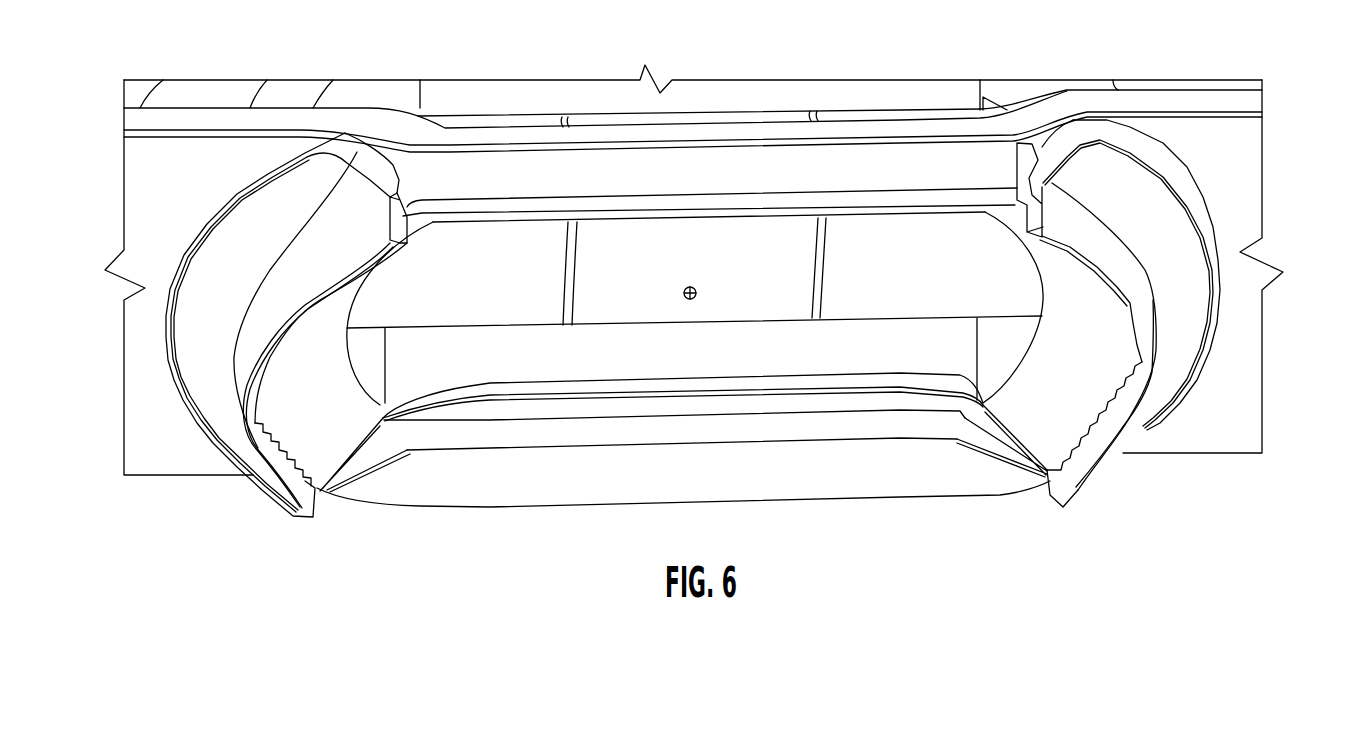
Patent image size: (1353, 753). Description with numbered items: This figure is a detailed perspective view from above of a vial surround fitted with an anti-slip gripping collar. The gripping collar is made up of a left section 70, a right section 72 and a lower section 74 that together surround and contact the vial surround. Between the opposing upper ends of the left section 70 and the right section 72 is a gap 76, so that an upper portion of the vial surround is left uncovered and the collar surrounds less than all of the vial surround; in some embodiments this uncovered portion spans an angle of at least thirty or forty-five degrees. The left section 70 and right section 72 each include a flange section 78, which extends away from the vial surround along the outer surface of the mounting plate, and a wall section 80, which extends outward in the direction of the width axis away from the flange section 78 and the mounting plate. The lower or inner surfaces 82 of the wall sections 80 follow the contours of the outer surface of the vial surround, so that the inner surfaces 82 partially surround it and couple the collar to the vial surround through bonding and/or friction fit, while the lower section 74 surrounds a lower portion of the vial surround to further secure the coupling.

The left section 70 is at (145, 233).
The right section 72 is at (1243, 348).
The lower section 74 is at (866, 538).
The gap 76 is at (812, 95).
The flange section 78 is at (274, 220).
The wall section 80 is at (330, 268).
The inner surface 82 is at (1015, 203).